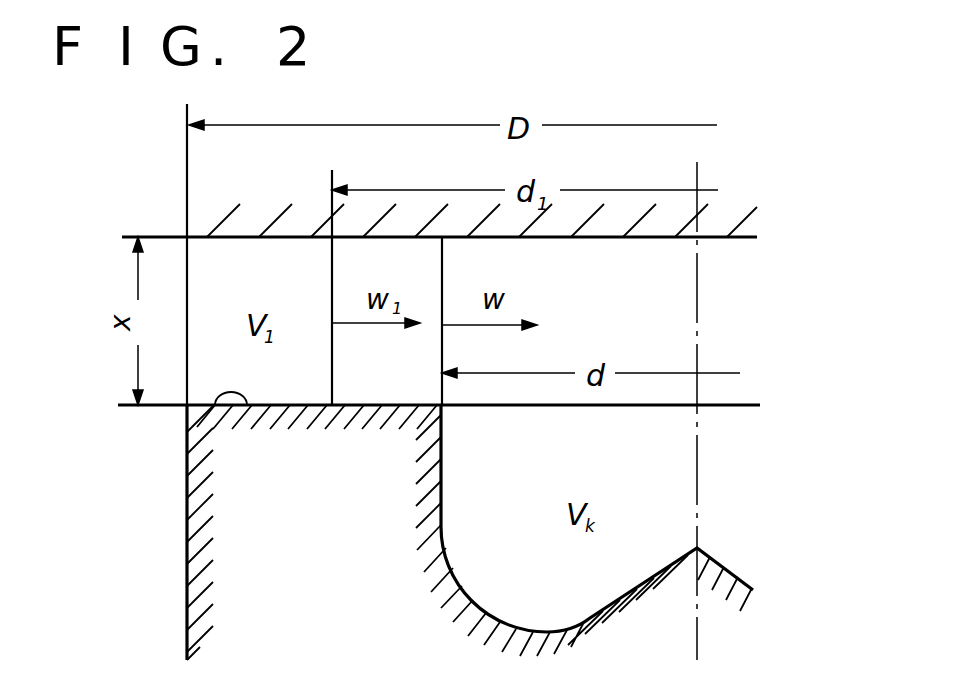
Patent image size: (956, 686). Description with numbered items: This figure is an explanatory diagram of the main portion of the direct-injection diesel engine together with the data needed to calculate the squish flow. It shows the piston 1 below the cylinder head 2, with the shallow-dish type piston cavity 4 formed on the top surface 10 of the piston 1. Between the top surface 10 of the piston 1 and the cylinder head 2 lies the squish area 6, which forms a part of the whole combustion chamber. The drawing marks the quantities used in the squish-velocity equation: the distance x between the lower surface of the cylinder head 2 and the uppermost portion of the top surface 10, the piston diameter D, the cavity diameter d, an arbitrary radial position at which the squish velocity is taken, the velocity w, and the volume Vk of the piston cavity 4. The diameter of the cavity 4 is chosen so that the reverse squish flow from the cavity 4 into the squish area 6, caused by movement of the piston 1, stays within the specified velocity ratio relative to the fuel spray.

The piston 1 is at (243, 542).
The cylinder head 2 is at (720, 227).
The shallow-dish type piston cavity 4 is at (441, 580).
The squish area 6 is at (366, 382).
The top surface 10 is at (215, 406).